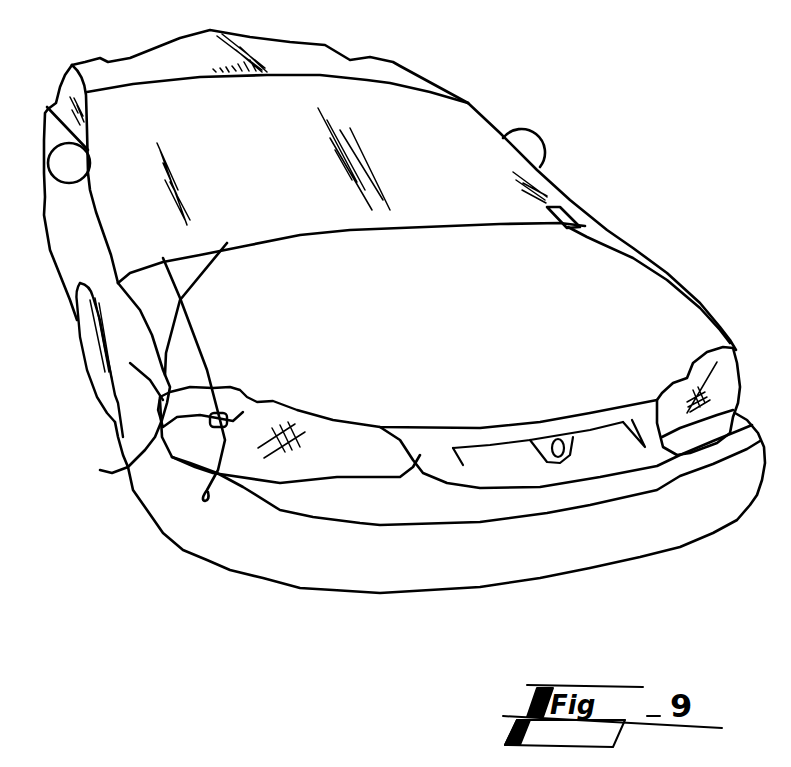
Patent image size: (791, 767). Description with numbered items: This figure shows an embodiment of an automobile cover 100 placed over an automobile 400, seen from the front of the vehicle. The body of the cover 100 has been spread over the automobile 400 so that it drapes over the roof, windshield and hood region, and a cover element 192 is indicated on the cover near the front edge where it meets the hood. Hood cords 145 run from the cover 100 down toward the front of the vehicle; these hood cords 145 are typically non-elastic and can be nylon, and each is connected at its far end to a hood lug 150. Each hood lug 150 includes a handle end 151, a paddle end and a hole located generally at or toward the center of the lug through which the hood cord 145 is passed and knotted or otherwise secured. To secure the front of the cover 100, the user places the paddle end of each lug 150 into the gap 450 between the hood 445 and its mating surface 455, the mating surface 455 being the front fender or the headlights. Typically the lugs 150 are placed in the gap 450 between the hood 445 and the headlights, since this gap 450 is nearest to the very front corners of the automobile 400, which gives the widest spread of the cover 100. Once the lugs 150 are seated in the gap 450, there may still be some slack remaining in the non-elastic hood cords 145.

The automobile cover 100 is at (357, 117).
The automobile 400 is at (628, 175).
The hood cords 145 is at (160, 333).
The handle end 151 is at (112, 473).
The sensor unit 192 is at (259, 403).
The mating surface 455 is at (317, 417).
The hood lugs 150 is at (243, 412).
The hood 445 is at (480, 428).
The gap 450 is at (530, 458).